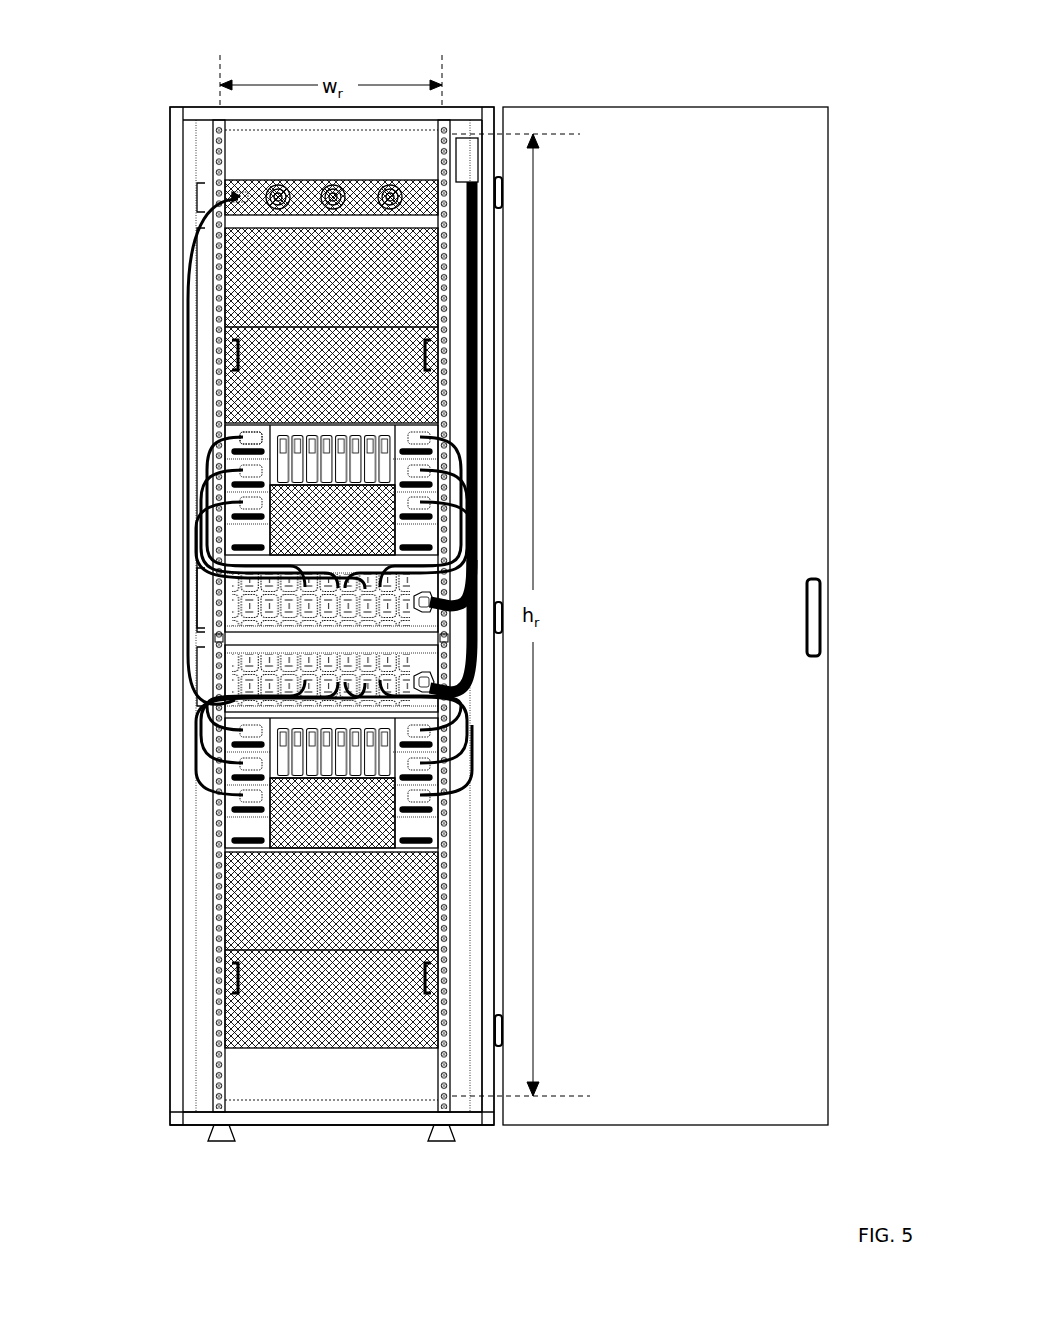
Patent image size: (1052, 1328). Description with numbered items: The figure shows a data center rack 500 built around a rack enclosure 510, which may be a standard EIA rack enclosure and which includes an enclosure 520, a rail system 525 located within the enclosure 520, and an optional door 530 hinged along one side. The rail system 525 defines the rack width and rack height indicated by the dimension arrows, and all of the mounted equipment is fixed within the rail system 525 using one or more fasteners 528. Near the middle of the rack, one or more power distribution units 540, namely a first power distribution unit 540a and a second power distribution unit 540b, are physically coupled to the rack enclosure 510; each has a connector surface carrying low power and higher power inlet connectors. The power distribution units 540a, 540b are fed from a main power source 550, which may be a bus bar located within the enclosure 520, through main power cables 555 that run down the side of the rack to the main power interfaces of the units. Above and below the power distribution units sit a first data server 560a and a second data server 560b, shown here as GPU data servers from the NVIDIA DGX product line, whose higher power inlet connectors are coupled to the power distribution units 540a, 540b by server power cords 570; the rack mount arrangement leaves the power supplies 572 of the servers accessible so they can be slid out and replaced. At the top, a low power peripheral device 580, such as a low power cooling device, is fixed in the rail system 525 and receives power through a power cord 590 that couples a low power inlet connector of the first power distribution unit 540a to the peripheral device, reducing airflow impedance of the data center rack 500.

The data center rack 500 is at (140, 74).
The rack enclosure 510 is at (160, 122).
The enclosure 520 is at (178, 1096).
The rail system 525 is at (213, 1051).
The fasteners 528 is at (452, 580).
The door 530 is at (828, 1096).
The power distribution units 540 is at (64, 700).
The first power distribution unit 540a is at (197, 600).
The second power distribution unit 540b is at (197, 677).
The main power source 550 is at (478, 158).
The main power cables 555 is at (482, 306).
The first data server 560a is at (197, 884).
The second data server 560b is at (197, 393).
The server power cords 570 is at (452, 460).
The power supplies 572 is at (236, 436).
The low power peripheral device 580 is at (196, 196).
The power cord 590 is at (188, 316).